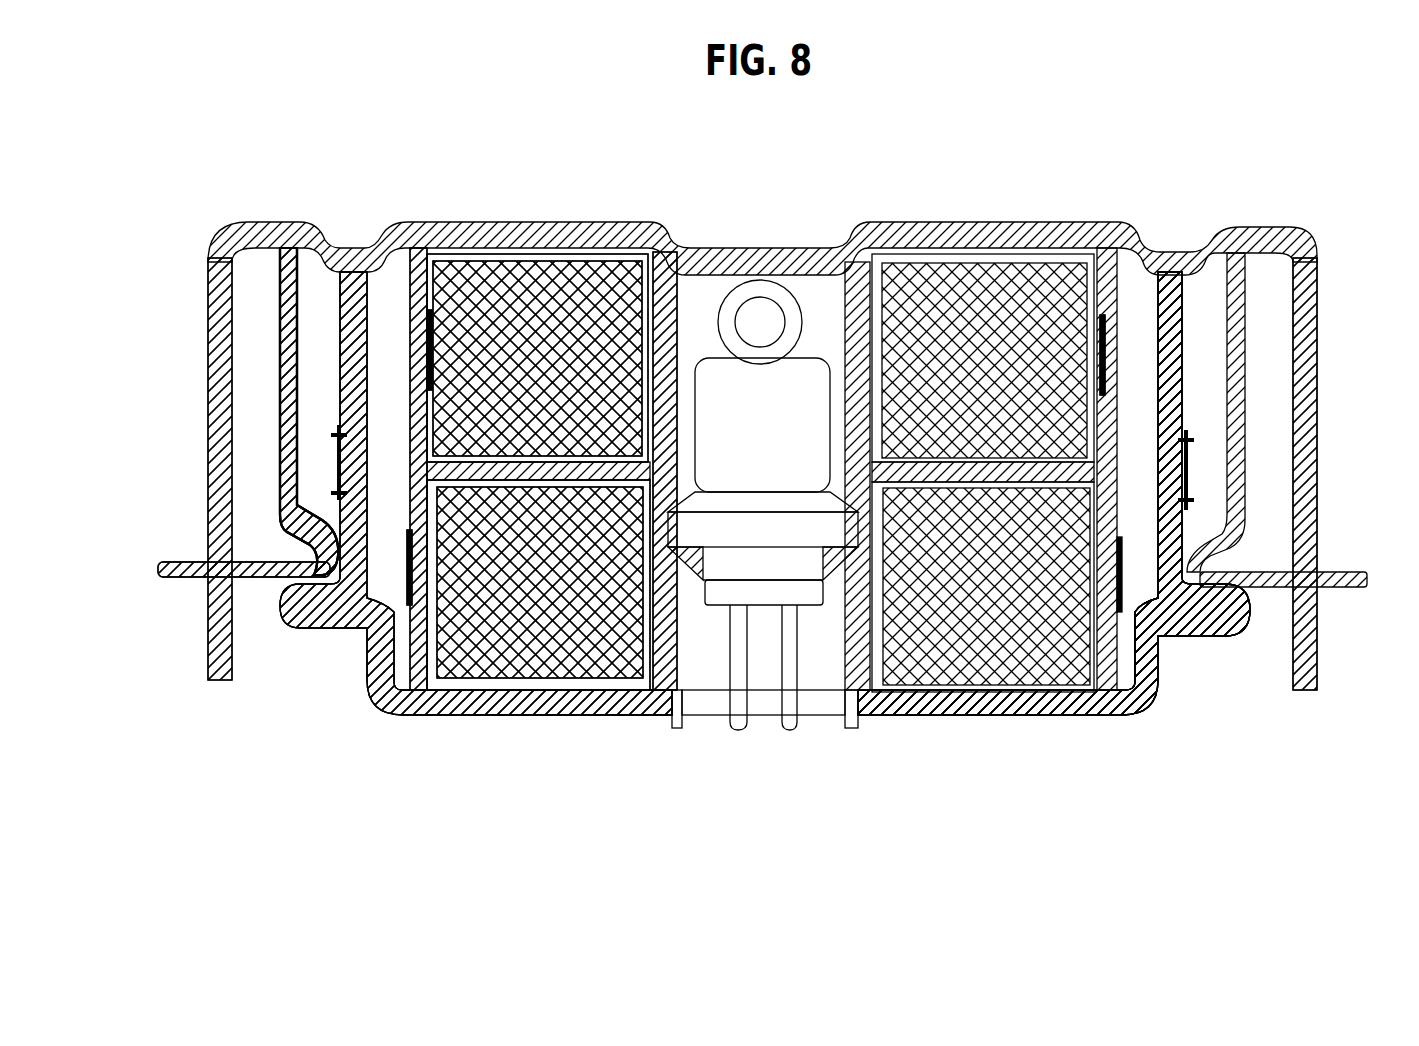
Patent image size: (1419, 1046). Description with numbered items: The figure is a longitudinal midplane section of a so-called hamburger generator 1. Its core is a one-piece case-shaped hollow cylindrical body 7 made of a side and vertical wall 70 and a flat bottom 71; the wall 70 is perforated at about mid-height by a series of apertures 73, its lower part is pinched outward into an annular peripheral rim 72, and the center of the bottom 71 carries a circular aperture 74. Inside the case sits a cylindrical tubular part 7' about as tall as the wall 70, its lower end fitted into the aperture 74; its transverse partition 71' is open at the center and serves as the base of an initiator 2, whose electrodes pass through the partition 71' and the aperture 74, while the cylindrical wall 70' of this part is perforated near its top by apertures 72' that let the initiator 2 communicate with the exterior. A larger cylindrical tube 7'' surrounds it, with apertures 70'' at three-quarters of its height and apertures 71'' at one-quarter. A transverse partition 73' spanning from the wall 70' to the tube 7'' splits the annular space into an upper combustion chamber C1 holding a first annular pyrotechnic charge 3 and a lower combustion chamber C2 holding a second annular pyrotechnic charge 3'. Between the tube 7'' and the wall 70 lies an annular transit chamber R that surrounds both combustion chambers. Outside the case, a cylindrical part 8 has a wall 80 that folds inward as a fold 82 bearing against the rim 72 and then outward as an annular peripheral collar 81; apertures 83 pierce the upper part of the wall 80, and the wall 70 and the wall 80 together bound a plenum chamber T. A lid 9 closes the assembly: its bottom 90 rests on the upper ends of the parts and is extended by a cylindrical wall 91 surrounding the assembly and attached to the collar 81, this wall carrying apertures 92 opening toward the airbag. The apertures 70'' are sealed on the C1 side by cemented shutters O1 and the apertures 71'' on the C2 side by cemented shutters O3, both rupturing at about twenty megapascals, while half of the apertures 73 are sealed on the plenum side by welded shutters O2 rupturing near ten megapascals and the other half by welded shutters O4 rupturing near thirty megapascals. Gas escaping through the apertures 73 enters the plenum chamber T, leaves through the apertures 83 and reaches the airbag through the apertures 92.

The generator 1 is at (948, 142).
The initiator 2 is at (774, 446).
The first annular pyrotechnic charge 3 is at (537, 319).
The second annular pyrotechnic charge 3' is at (538, 625).
The case-shaped hollow cylindrical body 7 is at (765, 539).
The cylindrical tubular part 7' is at (664, 767).
The cylindrical tube 7'' is at (434, 421).
The cylindrical part 8 is at (256, 298).
The lid 9 is at (172, 350).
The side and vertical wall 70 is at (1118, 493).
The cylindrical wall 70' is at (715, 530).
The apertures 70'' is at (270, 338).
The flat bottom 71 is at (1054, 535).
The transverse partition 71' is at (813, 784).
The apertures 71'' is at (488, 556).
The annular peripheral rim 72 is at (1058, 493).
The apertures 72' is at (722, 433).
The apertures 73 is at (1158, 497).
The transverse partition 73' is at (503, 639).
The circular aperture 74 is at (828, 708).
The wall 80 is at (283, 483).
The annular peripheral collar 81 is at (183, 580).
The fold 82 is at (290, 560).
The apertures 83 is at (1240, 300).
The bottom of the lid 90 is at (1050, 222).
The terminal bar 91 is at (1320, 638).
The apertures 92 is at (1306, 410).
The plenum chamber T is at (317, 290).
The annular transit chamber R is at (388, 290).
The combustion chamber C1 is at (622, 262).
The combustion chamber C2 is at (660, 698).
The cemented shutters O1 is at (1117, 327).
The welded shutters O2 is at (1183, 473).
The cemented shutters O3 is at (1160, 690).
The welded shutters O4 is at (372, 600).